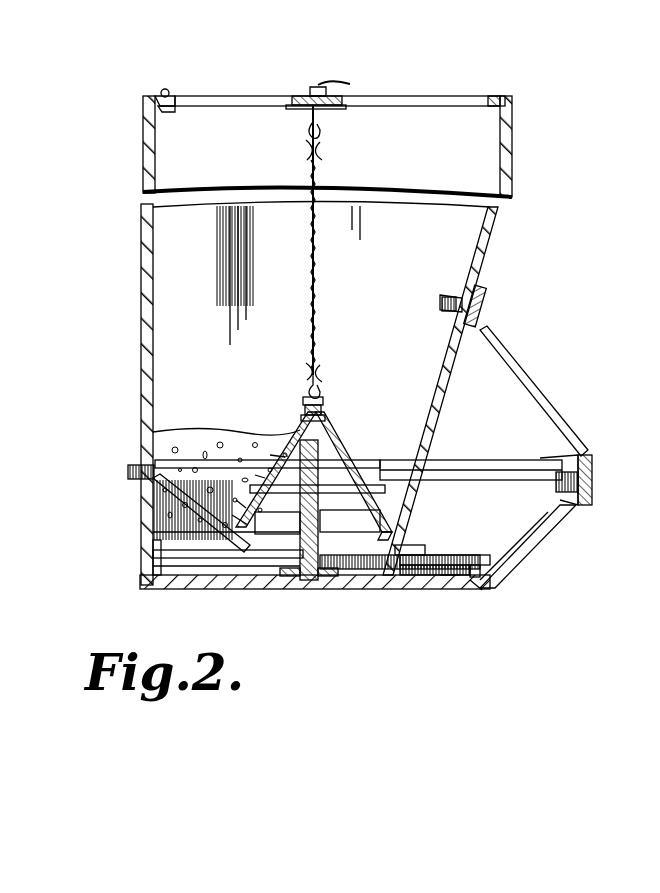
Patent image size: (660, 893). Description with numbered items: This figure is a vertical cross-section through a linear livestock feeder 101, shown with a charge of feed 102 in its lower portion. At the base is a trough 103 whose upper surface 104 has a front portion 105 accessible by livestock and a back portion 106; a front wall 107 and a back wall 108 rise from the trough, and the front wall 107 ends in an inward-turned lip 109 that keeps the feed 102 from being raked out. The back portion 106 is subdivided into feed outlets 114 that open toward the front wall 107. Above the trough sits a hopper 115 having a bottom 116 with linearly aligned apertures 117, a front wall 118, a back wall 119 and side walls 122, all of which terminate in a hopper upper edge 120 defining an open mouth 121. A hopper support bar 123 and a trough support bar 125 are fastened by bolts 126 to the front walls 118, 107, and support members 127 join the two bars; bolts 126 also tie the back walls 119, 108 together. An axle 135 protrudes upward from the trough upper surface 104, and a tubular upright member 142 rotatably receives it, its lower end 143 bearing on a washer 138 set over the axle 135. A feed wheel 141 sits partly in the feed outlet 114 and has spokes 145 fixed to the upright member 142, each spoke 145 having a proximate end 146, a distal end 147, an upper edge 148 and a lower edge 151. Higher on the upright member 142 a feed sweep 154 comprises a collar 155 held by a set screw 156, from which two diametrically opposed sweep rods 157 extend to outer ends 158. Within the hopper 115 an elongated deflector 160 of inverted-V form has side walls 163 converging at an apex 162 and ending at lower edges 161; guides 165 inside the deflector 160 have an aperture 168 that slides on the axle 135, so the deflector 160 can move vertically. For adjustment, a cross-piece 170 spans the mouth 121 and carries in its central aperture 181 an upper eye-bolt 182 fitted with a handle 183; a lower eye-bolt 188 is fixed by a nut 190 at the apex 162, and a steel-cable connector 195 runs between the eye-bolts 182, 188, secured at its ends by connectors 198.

The linear feeder 101 is at (520, 95).
The feed 102 is at (160, 428).
The trough 103 is at (140, 583).
The upper surface 104 is at (468, 555).
The front portion 105 is at (492, 580).
The back portion 106 is at (192, 575).
The front wall 107 is at (540, 540).
The back wall 108 is at (141, 522).
The inward-turned lip 109 is at (530, 468).
The feed outlets 114 is at (412, 555).
The hopper 115 is at (143, 100).
The bottom 116 is at (392, 520).
The apertures 117 is at (290, 554).
The front wall 118 is at (472, 258).
The back wall 119 is at (153, 283).
The hopper upper edge 120 is at (152, 96).
The open mouth 121 is at (172, 112).
The side walls 122 is at (317, 275).
The hopper support bar 123 is at (478, 290).
The trough support bar 125 is at (590, 456).
The bolts 126 is at (490, 312).
The support members 127 is at (532, 380).
The axles 135 is at (330, 436).
The washers 138 is at (328, 580).
The feed wheels 141 is at (153, 548).
The tubular upright member 142 is at (300, 482).
The lower end 143 is at (290, 578).
The spokes 145 is at (476, 582).
The proximate end 146 is at (318, 578).
The distal end 147 is at (474, 565).
The upper edge 148 is at (425, 565).
The lower edge 151 is at (470, 580).
The feed sweep 154 is at (236, 518).
The collar 155 is at (258, 472).
The set screw 156 is at (340, 522).
The sweep rods 157 is at (262, 522).
The outer ends 158 is at (215, 536).
The deflector 160 is at (321, 400).
The lower edges 161 is at (244, 500).
The apex 162 is at (303, 400).
The side walls 163 is at (272, 440).
The guides 165 is at (350, 485).
The aperture 168 is at (272, 458).
The cross-pieces 170 is at (395, 105).
The aperture 181 is at (312, 108).
The upper eye-bolt 182 is at (322, 130).
The handle 183 is at (335, 84).
The lower eye-bolts 188 is at (310, 372).
The nuts 190 is at (325, 418).
The connectors 195 is at (316, 290).
The connectors 198 is at (307, 147).